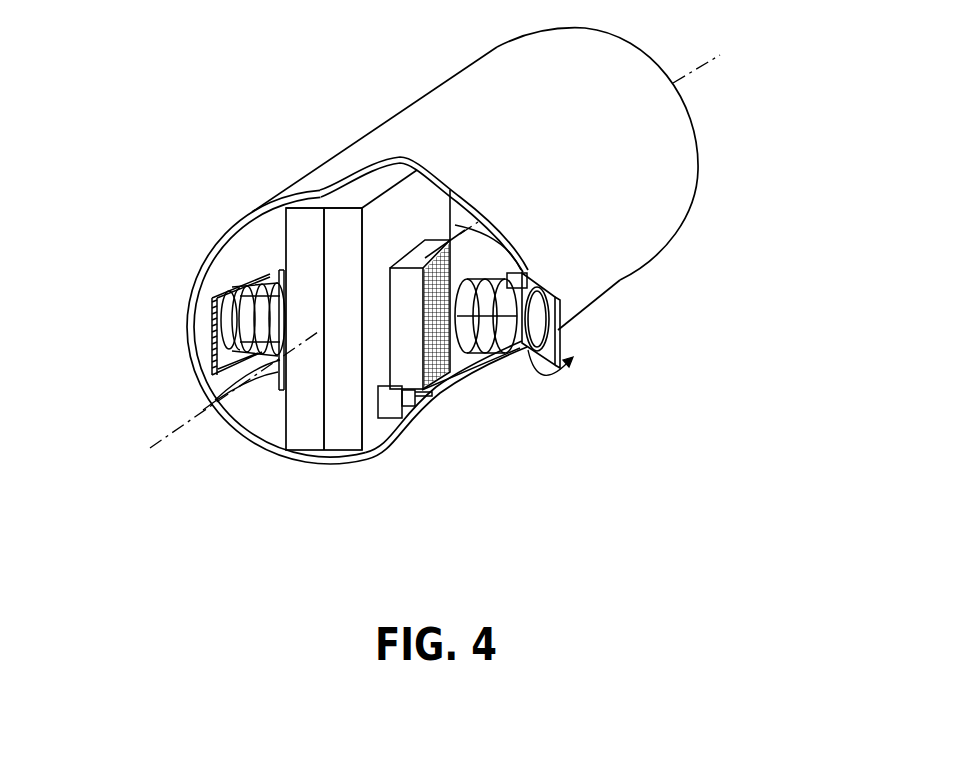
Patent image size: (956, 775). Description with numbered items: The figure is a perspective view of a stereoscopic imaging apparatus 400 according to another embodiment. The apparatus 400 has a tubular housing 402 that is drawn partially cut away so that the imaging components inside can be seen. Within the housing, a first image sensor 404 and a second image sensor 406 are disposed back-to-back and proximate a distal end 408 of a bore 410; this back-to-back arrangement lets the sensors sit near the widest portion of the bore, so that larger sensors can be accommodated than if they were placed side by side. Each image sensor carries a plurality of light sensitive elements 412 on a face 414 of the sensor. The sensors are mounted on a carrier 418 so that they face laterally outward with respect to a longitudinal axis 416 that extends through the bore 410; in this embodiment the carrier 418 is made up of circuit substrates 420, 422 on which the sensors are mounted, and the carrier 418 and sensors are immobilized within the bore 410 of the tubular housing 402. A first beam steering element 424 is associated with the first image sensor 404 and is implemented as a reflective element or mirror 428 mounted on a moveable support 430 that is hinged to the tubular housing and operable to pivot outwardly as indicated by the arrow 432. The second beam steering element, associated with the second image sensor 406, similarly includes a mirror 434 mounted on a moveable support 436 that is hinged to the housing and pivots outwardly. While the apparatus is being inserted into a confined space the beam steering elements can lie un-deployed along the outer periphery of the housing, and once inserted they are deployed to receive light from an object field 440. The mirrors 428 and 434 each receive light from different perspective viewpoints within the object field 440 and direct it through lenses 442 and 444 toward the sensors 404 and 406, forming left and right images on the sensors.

The stereoscopic imaging apparatus 400 is at (247, 62).
The tubular housing 402 is at (641, 252).
The first image sensor 404 is at (425, 242).
The second image sensor 406 is at (278, 395).
The distal end 408 is at (273, 467).
The bore 410 is at (236, 250).
The light sensitive elements 412 is at (440, 372).
The face 414 is at (494, 252).
The longitudinal axis 416 is at (151, 449).
The carrier 418 is at (207, 106).
The circuit substrate 420 is at (307, 230).
The circuit substrate 422 is at (343, 230).
The first beam steering element 424 is at (566, 343).
The mirror 428 is at (557, 331).
The moveable support 430 is at (520, 273).
The arrow 432 is at (550, 382).
The mirror 434 is at (228, 332).
The moveable support 436 is at (265, 358).
The object field 440 is at (97, 559).
The lens 442 is at (468, 360).
The lens 444 is at (276, 382).